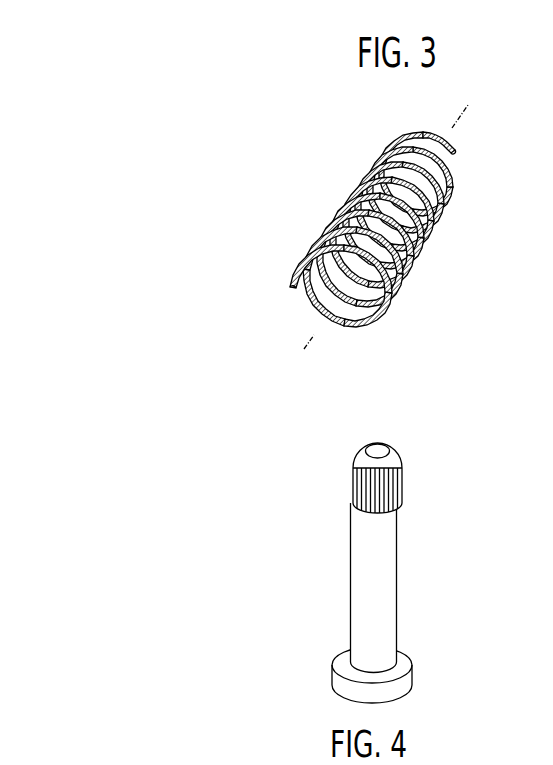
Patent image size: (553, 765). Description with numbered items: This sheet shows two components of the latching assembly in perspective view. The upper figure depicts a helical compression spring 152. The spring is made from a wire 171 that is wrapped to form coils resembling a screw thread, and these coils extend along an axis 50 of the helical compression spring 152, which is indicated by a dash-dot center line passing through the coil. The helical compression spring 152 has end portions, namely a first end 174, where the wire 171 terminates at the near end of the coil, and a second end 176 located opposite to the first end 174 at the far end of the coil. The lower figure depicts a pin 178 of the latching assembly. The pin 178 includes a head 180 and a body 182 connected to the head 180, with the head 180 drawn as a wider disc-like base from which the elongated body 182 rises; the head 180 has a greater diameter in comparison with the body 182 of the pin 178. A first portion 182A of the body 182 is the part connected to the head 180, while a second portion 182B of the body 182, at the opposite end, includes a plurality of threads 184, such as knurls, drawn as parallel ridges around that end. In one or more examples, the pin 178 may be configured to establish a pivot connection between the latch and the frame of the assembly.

In FIG. 3, the helical compression spring 152 is at (297, 96).
In FIG. 3, the axis 50 is at (455, 123).
In FIG. 3, the wire 171 is at (360, 215).
In FIG. 3, the first end 174 is at (293, 289).
In FIG. 3, the second end 176 is at (462, 154).
In FIG. 4, the pin 178 is at (302, 448).
In FIG. 4, the head 180 is at (328, 674).
In FIG. 4, the body 182 is at (348, 568).
In FIG. 4, the first portion 182A is at (397, 667).
In FIG. 4, the second portion 182B is at (396, 497).
In FIG. 4, the threads 184 is at (364, 482).